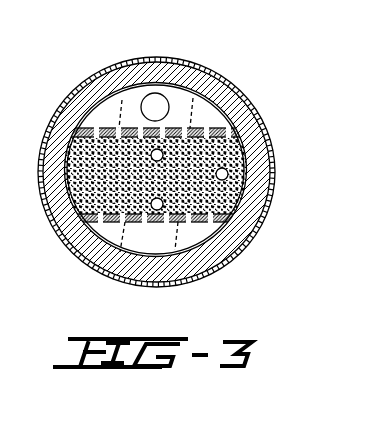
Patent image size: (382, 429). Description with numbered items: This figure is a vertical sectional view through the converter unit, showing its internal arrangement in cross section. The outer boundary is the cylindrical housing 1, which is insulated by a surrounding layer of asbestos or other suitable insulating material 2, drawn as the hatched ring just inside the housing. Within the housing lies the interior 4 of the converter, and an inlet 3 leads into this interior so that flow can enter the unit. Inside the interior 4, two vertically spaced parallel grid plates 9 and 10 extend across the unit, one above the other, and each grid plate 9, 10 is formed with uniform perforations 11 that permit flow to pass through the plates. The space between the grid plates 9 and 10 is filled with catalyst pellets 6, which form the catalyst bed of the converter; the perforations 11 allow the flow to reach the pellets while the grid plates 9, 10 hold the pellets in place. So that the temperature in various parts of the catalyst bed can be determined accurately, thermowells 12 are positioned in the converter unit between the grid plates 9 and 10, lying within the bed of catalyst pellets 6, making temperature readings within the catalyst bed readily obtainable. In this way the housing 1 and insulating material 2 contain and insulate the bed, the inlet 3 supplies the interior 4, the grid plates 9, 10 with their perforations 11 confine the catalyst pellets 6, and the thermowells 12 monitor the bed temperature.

The cylindrical housing 1 is at (54, 126).
The insulating material 2 is at (82, 107).
The inlet 3 is at (155, 98).
The interior 4 is at (103, 97).
The catalyst pellets 6 is at (70, 150).
The grid plate 9 is at (175, 129).
The grid plate 10 is at (159, 223).
The perforations 11 is at (133, 128).
The thermowells 12 is at (228, 172).